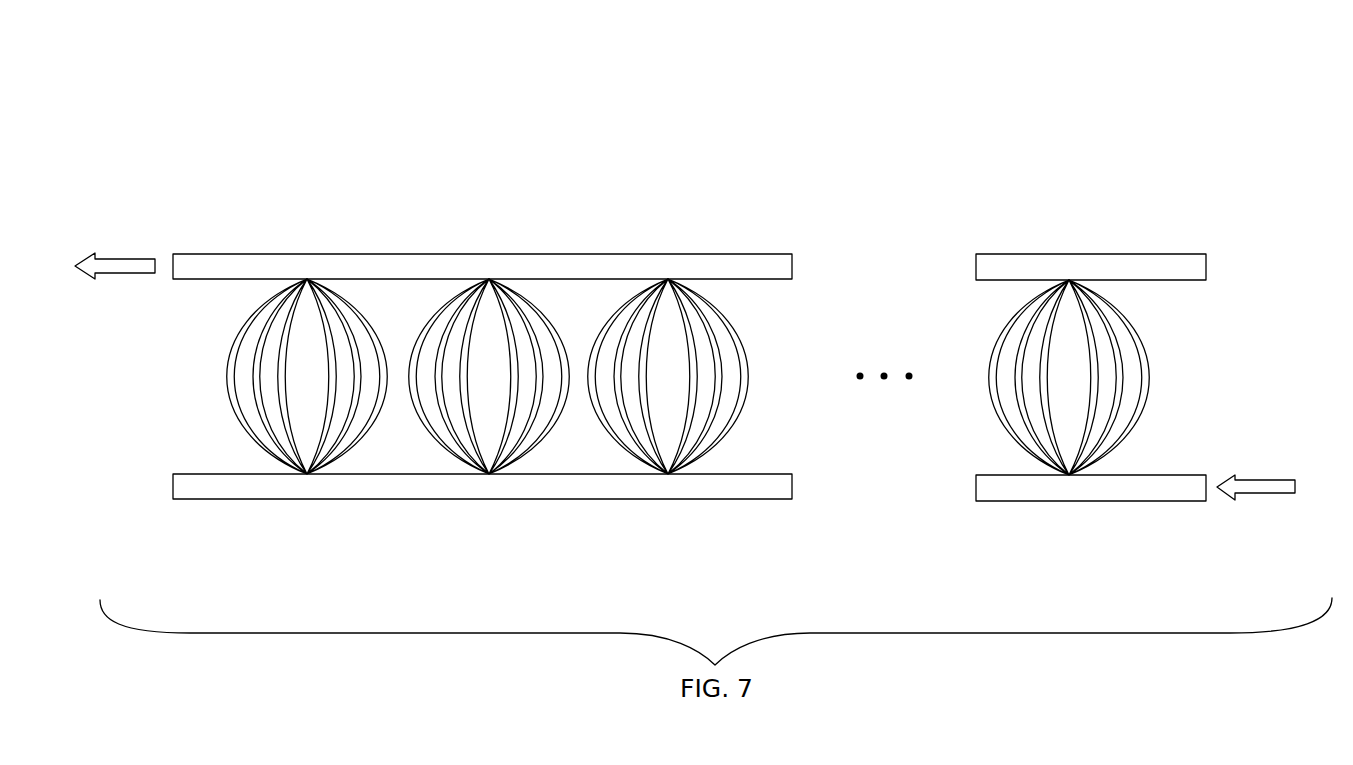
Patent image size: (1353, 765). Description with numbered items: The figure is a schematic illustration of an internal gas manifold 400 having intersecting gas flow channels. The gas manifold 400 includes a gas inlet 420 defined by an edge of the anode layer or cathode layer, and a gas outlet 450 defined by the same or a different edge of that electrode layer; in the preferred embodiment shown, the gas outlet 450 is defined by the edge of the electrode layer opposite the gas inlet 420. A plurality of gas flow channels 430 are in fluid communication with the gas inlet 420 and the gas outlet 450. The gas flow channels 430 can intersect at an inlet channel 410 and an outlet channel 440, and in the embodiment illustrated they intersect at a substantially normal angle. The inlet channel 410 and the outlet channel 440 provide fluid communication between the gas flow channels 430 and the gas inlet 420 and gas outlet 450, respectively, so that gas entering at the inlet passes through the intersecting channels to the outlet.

The gas manifold 400 is at (123, 91).
The inlet channel 410 is at (410, 500).
The gas inlet 420 is at (1207, 498).
The gas flow channels 430 is at (280, 289).
The outlet channel 440 is at (400, 253).
The gas outlet 450 is at (173, 263).